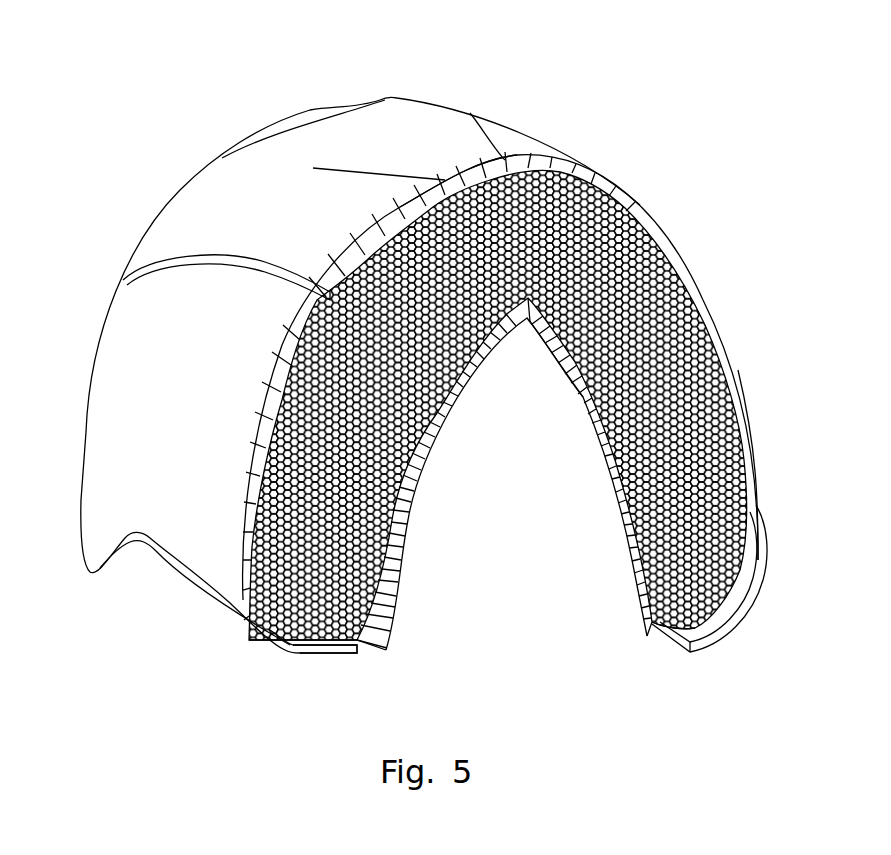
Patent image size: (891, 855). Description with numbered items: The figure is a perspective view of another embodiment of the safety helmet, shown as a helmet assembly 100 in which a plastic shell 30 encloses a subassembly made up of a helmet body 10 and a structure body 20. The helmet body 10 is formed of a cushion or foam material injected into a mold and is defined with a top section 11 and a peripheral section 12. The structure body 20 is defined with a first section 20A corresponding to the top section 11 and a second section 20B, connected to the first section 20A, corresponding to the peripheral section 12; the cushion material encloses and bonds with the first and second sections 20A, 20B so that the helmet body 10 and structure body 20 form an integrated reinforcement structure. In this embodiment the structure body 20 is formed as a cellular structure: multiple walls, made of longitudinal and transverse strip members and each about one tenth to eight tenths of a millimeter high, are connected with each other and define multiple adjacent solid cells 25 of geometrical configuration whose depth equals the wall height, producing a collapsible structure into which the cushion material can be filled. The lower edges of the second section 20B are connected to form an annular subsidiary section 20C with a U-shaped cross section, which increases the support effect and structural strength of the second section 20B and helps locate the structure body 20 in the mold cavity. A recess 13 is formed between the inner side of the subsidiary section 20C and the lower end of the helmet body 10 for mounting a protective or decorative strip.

The helmet assembly 100 is at (248, 104).
The plastic shell 30 is at (190, 200).
The structure body 20 is at (730, 298).
The first section 20A is at (466, 175).
The second section 20B is at (760, 463).
The subsidiary section 20C is at (308, 650).
The helmet body 10 is at (640, 210).
The top section 11 is at (527, 163).
The peripheral section 12 is at (243, 572).
The recess 13 is at (383, 633).
The solid cell 25 is at (740, 575).